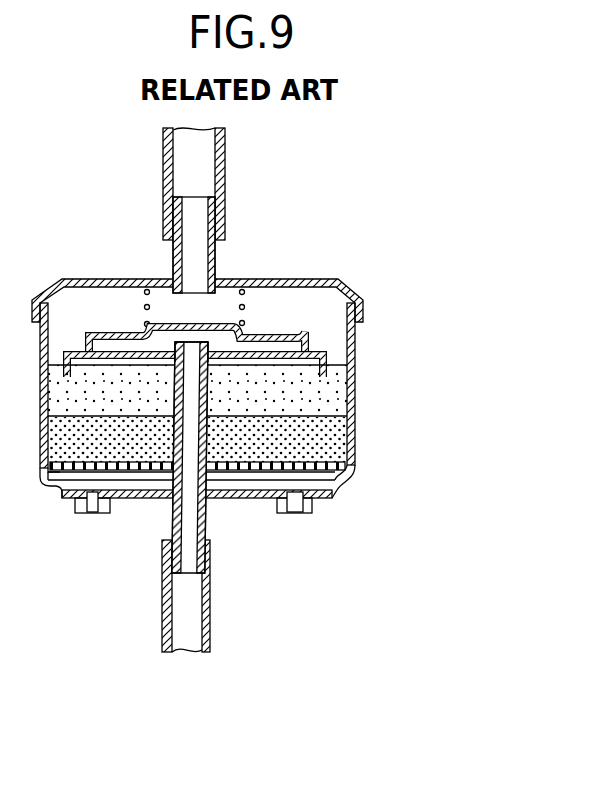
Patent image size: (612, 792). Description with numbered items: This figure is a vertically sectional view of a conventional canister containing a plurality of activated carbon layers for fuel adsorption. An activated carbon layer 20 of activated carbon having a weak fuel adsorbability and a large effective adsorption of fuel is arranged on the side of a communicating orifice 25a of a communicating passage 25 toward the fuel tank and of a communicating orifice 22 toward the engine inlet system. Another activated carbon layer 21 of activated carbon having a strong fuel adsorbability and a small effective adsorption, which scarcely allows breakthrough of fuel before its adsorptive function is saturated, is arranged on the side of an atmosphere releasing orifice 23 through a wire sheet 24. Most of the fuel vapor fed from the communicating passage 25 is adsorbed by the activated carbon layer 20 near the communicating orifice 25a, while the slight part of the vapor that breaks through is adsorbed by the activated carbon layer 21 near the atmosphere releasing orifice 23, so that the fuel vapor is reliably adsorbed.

The activated carbon layer 20 is at (326, 385).
The activated carbon layer 21 is at (337, 433).
The communicating orifice 22 is at (206, 150).
The atmosphere releasing orifice 23 is at (295, 514).
The wire sheet 24 is at (257, 481).
The communicating passage 25 is at (192, 628).
The communicating orifice 25a is at (200, 322).